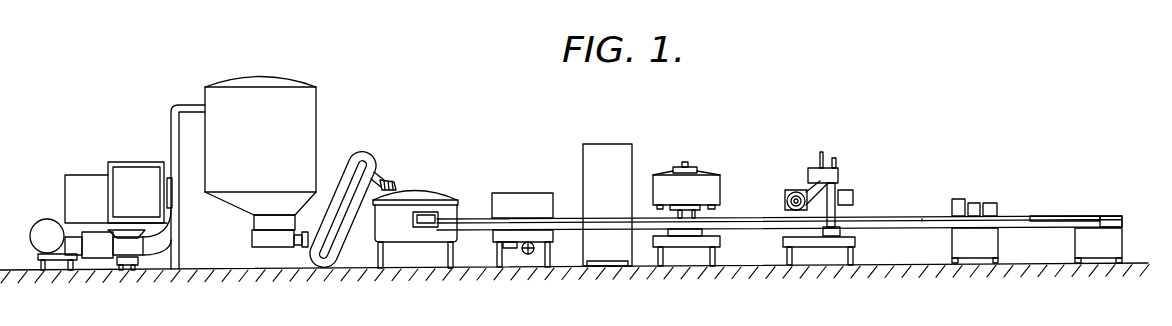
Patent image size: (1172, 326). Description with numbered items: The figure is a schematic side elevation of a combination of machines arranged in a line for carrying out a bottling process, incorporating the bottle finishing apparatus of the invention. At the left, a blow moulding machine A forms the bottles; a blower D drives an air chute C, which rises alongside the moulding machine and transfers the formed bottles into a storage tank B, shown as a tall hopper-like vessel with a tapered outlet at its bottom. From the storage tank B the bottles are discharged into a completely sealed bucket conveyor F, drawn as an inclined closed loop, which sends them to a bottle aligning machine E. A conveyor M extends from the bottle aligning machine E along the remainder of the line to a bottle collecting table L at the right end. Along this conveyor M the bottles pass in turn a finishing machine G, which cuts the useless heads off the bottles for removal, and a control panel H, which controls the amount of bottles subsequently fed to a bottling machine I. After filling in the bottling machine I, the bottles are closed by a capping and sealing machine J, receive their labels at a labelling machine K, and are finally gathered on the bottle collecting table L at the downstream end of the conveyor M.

The blow moulding machine A is at (132, 177).
The storage tank B is at (316, 98).
The air chute C is at (175, 122).
The blower D is at (43, 230).
The bottle aligning machine E is at (420, 188).
The completely sealed bucket conveyor F is at (347, 170).
The finishing machine G is at (520, 203).
The control panel H is at (583, 153).
The bottling machine I is at (713, 175).
The capping and sealing machine J is at (842, 197).
The labelling machine K is at (992, 214).
The bottle collecting table L is at (1103, 235).
The conveyor M is at (895, 217).